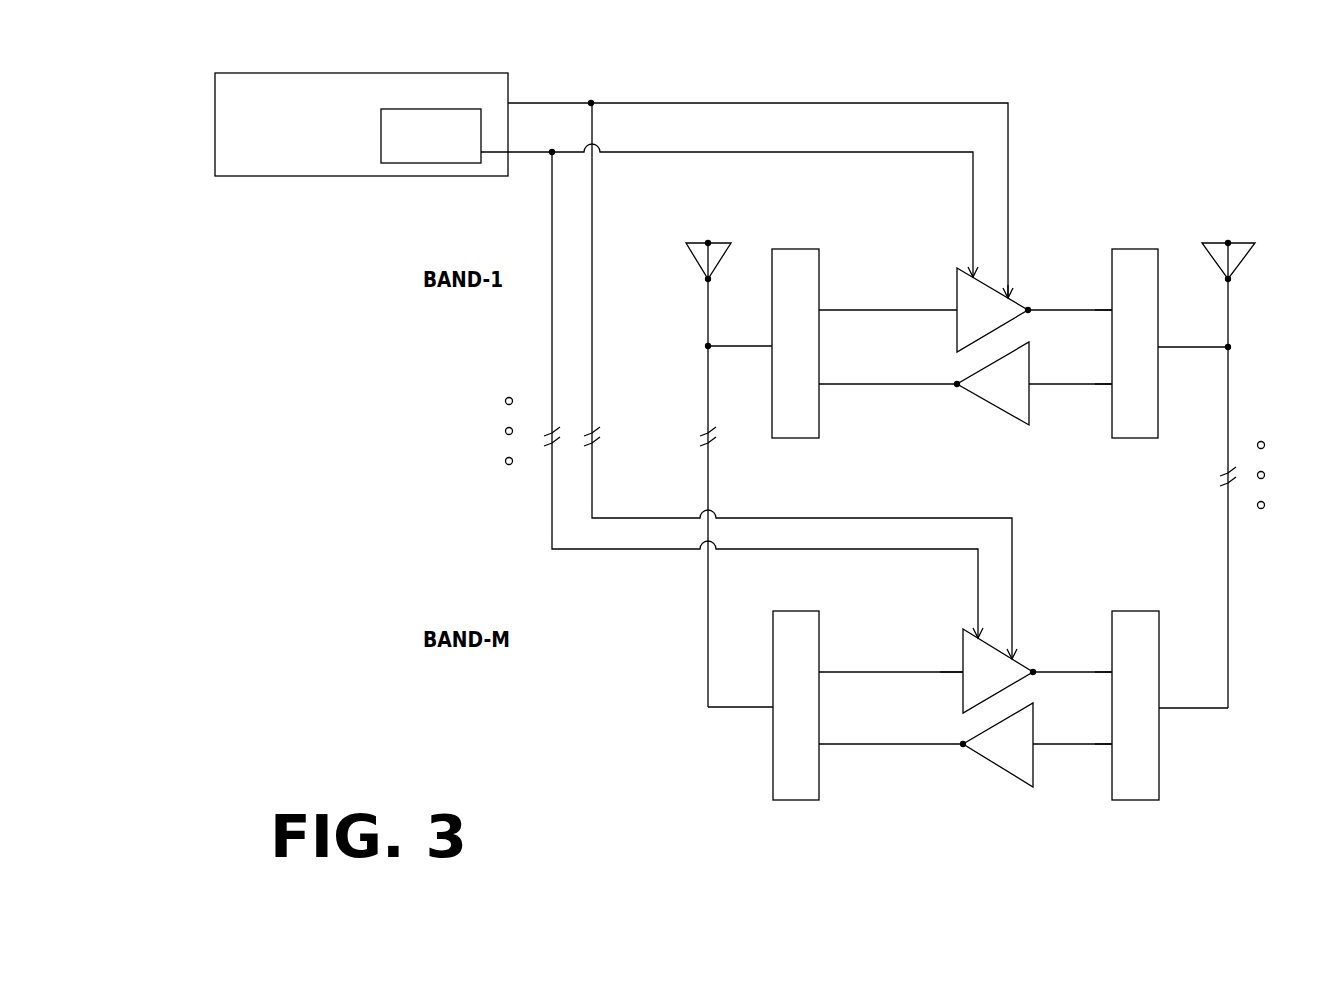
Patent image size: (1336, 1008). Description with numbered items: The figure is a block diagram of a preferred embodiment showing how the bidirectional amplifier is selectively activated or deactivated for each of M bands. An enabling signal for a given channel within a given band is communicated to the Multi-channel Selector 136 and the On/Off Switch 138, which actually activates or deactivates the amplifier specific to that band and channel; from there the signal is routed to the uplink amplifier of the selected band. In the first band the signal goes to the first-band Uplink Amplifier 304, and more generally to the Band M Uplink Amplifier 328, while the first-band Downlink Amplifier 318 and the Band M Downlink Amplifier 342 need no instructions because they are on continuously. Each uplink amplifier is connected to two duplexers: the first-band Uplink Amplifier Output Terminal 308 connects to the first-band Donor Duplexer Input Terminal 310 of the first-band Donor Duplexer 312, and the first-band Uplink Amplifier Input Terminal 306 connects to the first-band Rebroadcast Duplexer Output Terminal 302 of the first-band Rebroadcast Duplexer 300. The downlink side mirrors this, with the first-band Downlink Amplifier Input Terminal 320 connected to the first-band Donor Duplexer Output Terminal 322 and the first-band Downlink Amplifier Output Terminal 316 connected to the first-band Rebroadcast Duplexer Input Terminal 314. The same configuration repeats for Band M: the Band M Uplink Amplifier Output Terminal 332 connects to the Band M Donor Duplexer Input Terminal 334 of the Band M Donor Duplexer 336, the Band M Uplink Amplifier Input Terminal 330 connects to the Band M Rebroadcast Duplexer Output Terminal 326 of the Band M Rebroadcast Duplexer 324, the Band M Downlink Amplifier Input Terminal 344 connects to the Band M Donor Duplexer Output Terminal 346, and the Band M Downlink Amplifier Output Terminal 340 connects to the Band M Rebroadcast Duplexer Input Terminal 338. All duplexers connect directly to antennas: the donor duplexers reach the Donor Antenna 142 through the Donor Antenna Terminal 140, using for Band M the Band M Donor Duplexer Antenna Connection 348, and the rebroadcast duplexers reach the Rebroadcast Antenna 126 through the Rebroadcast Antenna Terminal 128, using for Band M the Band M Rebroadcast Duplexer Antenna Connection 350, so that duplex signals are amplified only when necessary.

The Multi-channel Selector 136 is at (297, 180).
The On/Off Switch 138 is at (375, 143).
The Rebroadcast Antenna 126 is at (690, 283).
The Rebroadcast Antenna Terminal 128 is at (762, 352).
The Band 1 Rebroadcast Duplexer 300 is at (795, 243).
The Band 1 Rebroadcast Duplexer Output Terminal 302 is at (823, 314).
The Band 1 Uplink Amplifier 304 is at (951, 280).
The Band 1 Uplink Amplifier Input Terminal 306 is at (1013, 296).
The Band 1 Uplink Amplifier Output Terminal 308 is at (1040, 300).
The Band 1 Donor Duplexer Input Terminal 310 is at (1107, 315).
The Band 1 Donor Duplexer 312 is at (1130, 244).
The Band 1 Rebroadcast Duplexer Input Terminal 314 is at (823, 390).
The Band 1 Downlink Amplifier Output Terminal 316 is at (952, 394).
The Band 1 Downlink Amplifier 318 is at (980, 402).
The Band 1 Downlink Amplifier Input Terminal 320 is at (1034, 390).
The Band 1 Donor Duplexer Output Terminal 322 is at (1107, 390).
The Donor Antenna Terminal 140 is at (1167, 353).
The Donor Antenna 142 is at (1248, 242).
The Band M Rebroadcast Duplexer 324 is at (797, 605).
The Band M Rebroadcast Duplexer Output Terminal 326 is at (823, 678).
The Band M Uplink Amplifier 328 is at (957, 648).
The Band M Uplink Amplifier Input Terminal 330 is at (957, 678).
The Band M Uplink Amplifier Output Terminal 332 is at (1037, 662).
The Band M Donor Duplexer Input Terminal 334 is at (1103, 675).
The Band M Donor Duplexer 336 is at (1135, 606).
The Band M Rebroadcast Duplexer Input Terminal 338 is at (823, 750).
The Band M Downlink Amplifier Output Terminal 340 is at (955, 752).
The Band M Downlink Amplifier 342 is at (990, 760).
The Band M Downlink Amplifier Input Terminal 344 is at (1038, 752).
The Band M Donor Duplexer Output Terminal 346 is at (1107, 750).
The Band M Donor Duplexer Antenna Connection 348 is at (1162, 712).
The Band M Rebroadcast Duplexer Antenna Connection 350 is at (773, 713).